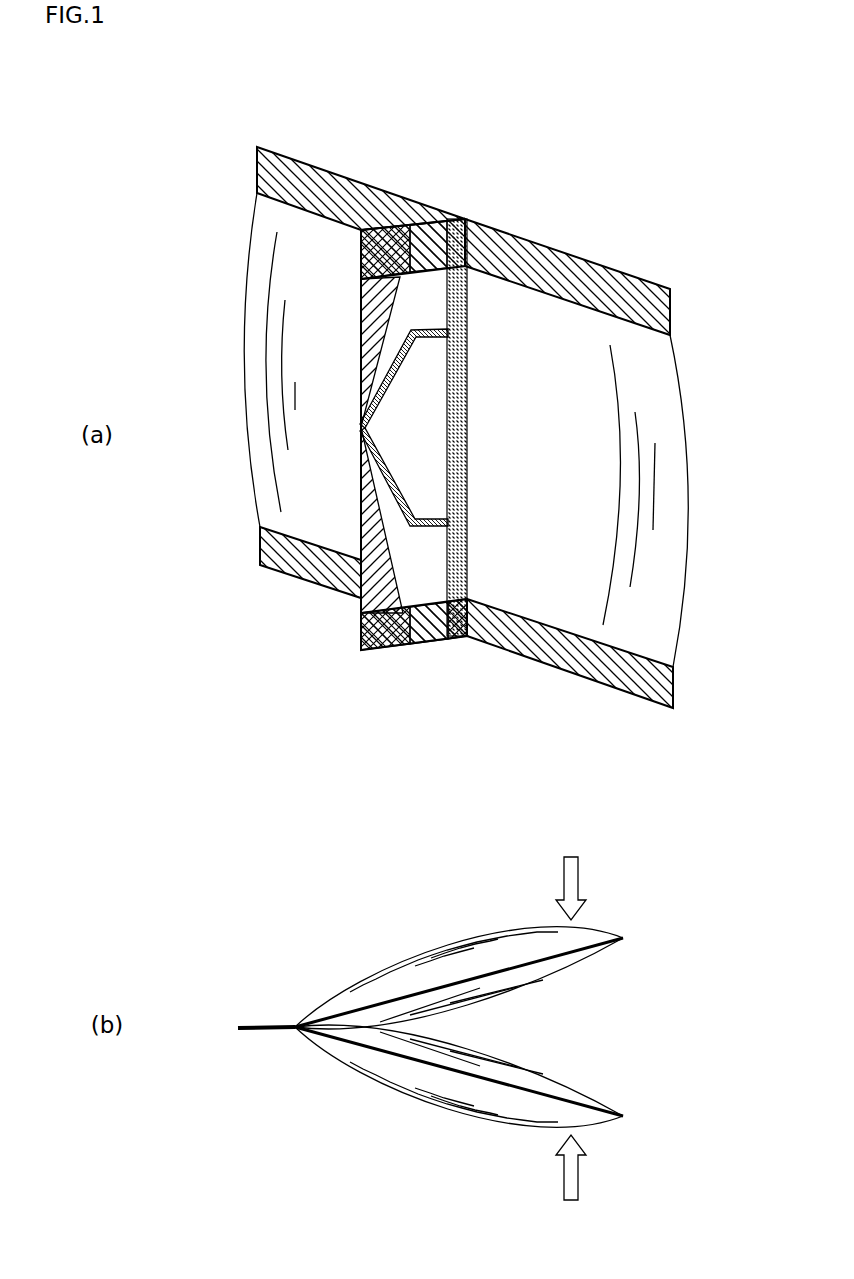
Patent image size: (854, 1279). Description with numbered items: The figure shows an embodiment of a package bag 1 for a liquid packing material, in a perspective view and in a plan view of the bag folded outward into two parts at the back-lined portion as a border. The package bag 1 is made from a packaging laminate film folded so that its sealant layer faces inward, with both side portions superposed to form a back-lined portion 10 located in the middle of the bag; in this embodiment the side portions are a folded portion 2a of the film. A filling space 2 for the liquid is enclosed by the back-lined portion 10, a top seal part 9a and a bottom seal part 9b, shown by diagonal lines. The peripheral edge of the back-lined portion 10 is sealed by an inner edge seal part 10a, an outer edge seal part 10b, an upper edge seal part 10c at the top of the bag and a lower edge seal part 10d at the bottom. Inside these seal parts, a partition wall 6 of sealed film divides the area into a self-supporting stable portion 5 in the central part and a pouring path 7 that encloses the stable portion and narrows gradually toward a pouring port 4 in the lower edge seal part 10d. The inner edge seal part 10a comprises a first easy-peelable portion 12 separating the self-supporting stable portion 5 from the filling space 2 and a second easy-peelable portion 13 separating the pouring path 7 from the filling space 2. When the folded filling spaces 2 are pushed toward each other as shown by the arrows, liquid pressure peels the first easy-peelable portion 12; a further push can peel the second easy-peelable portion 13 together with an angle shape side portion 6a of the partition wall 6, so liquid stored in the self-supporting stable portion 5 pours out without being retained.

The package bag 1 is at (208, 205).
The filling space 2 is at (295, 357).
The folded portion 2a is at (248, 284).
The pouring port 4 is at (360, 442).
The self-supporting stable portion 5 is at (420, 418).
The partition wall 6 is at (393, 502).
The angle shape side portion 6a is at (392, 385).
The pouring path 7 is at (430, 305).
The top seal part 9a is at (671, 302).
The bottom seal part 9b is at (673, 692).
The back-lined portion 10 is at (385, 657).
The inner edge seal part 10a is at (475, 533).
The outer edge seal part 10b is at (370, 568).
The upper edge seal part 10c is at (427, 250).
The lower edge seal part 10d is at (417, 610).
The first easy-peelable portion 12 is at (460, 460).
The second easy-peelable portion 13 is at (458, 297).